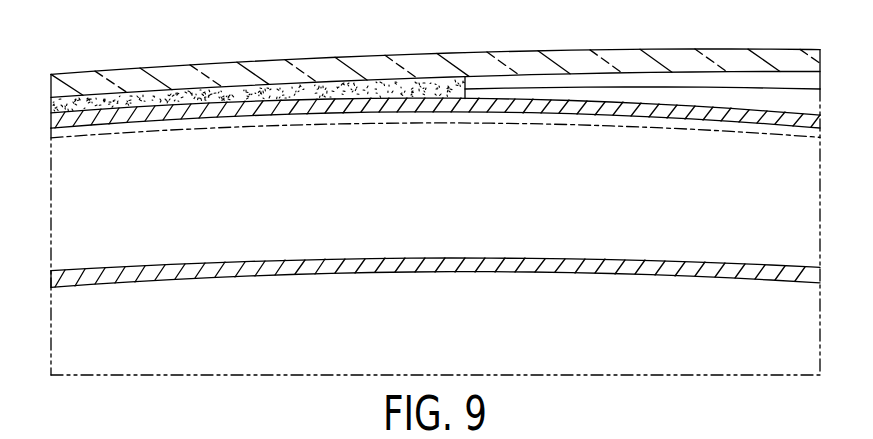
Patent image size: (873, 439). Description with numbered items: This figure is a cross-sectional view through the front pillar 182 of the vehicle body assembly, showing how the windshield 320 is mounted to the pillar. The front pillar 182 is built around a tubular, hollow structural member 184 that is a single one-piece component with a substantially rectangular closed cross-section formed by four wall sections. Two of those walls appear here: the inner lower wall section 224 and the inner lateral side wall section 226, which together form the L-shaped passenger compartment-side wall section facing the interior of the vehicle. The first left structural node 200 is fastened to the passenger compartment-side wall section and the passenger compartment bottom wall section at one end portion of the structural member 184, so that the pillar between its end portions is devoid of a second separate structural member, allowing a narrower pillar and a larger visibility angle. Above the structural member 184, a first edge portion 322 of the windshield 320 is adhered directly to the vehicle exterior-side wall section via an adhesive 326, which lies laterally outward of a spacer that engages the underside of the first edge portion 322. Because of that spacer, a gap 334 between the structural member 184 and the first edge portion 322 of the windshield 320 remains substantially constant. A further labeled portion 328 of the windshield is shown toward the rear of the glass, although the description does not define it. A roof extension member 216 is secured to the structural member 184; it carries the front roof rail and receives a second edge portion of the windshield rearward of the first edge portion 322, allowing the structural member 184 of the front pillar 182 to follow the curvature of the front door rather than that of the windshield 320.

The front pillar 182 is at (139, 292).
The structural member 184 is at (798, 194).
The first left structural node 200 is at (513, 153).
The roof extension member 216 is at (617, 95).
The inner lower wall section 224 is at (435, 275).
The inner lateral side wall section 226 is at (70, 200).
The windshield 320 is at (510, 50).
The first edge portion 322 is at (207, 61).
The adhesive 326 is at (214, 92).
The right portion of top layer 328 is at (722, 50).
The gap 334 is at (51, 103).